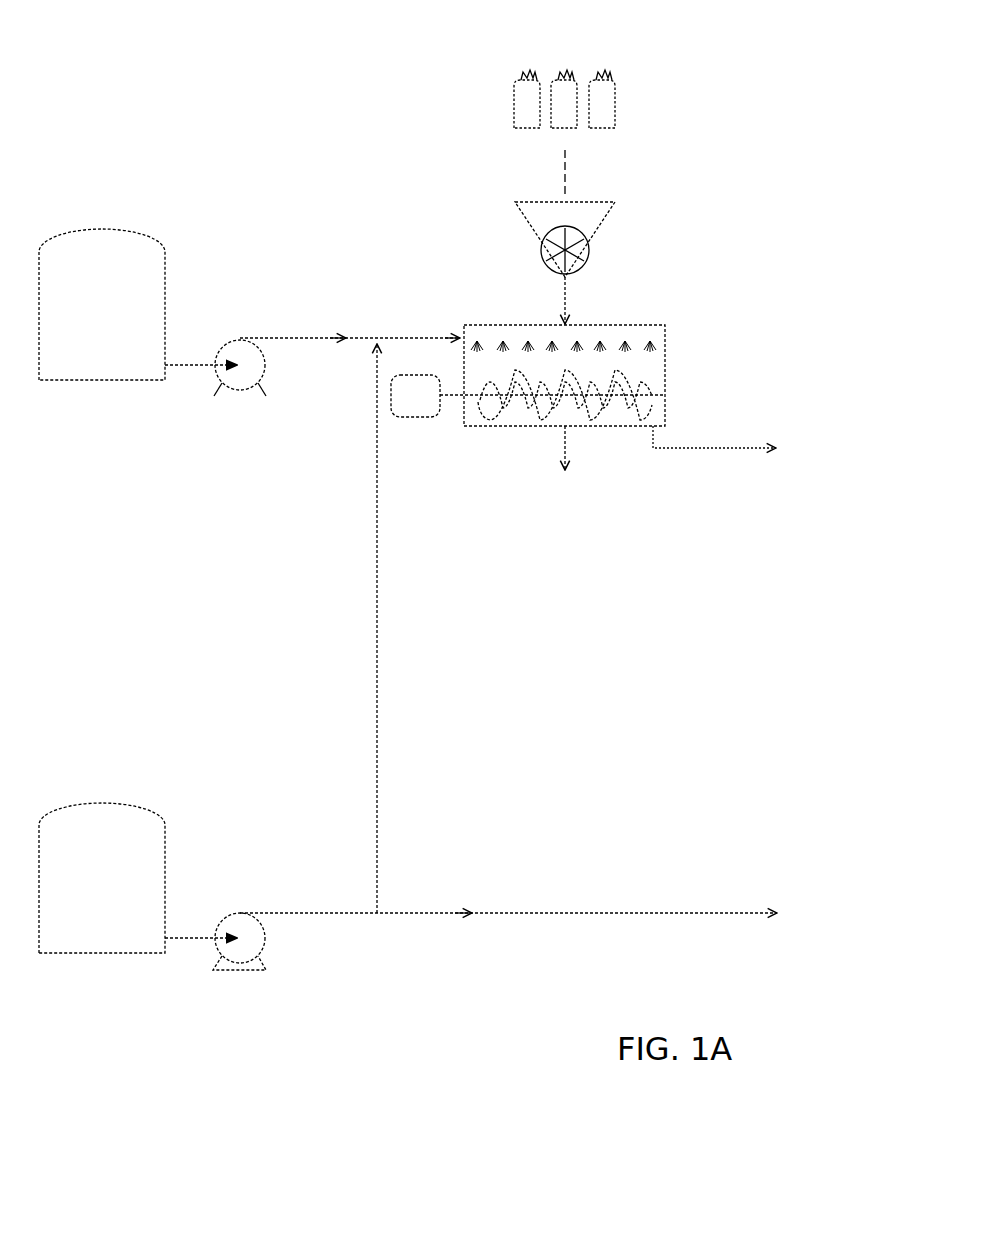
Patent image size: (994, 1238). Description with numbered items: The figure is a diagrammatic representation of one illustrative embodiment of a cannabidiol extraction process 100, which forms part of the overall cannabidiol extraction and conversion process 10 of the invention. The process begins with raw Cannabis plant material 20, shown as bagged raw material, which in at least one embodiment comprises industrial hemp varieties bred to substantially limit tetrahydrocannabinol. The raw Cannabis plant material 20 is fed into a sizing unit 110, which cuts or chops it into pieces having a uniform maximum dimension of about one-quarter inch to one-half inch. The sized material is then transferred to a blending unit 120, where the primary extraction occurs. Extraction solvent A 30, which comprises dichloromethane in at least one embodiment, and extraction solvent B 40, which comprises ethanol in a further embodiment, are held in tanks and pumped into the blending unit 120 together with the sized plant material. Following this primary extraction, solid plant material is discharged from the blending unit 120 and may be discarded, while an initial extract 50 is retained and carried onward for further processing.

The cannabidiol extraction and conversion process 10 is at (158, 130).
The raw Cannabis plant material 20 is at (641, 100).
The extraction solvent A 30 is at (249, 571).
The extraction solvent B 40 is at (432, 886).
The initial extract 50 is at (736, 448).
The cannabidiol extraction process 100 is at (338, 1045).
The sizing unit 110 is at (641, 233).
The blending unit 120 is at (707, 363).